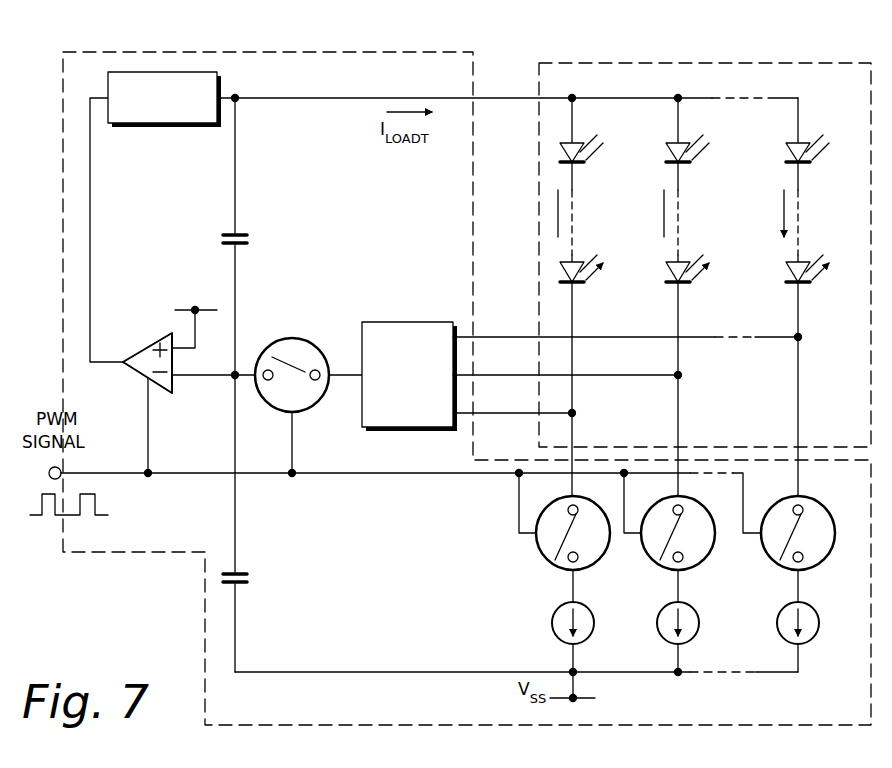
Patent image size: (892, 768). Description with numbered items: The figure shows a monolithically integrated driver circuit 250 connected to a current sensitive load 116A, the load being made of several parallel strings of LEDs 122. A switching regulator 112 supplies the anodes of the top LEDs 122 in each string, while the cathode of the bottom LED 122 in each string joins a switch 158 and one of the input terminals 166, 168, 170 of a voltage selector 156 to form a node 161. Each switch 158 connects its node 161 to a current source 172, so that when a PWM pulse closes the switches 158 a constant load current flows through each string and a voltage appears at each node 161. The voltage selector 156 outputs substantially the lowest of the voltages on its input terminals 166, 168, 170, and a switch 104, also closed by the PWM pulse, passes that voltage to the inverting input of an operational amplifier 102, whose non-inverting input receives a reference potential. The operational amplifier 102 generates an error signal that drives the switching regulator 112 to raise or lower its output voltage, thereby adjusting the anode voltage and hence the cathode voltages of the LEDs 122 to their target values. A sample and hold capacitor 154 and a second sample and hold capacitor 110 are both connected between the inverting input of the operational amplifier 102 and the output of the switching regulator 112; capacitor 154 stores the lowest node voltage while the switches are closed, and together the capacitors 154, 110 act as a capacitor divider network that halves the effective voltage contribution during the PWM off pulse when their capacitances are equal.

The driver circuit 250 is at (137, 555).
The current sensitive load 116A is at (537, 305).
The switching regulator 112 is at (157, 128).
The sample and hold capacitor 154 is at (247, 237).
The sample and hold capacitor 110 is at (247, 576).
The operational amplifier 102 is at (152, 345).
The switch 104 is at (297, 338).
The voltage selector 156 is at (407, 322).
The input terminal 170 is at (648, 337).
The input terminal 168 is at (645, 375).
The input terminal 166 is at (528, 413).
The node 161 is at (578, 413).
The LED 122 is at (584, 163).
The switch 158 is at (545, 562).
The current source 172 is at (552, 628).